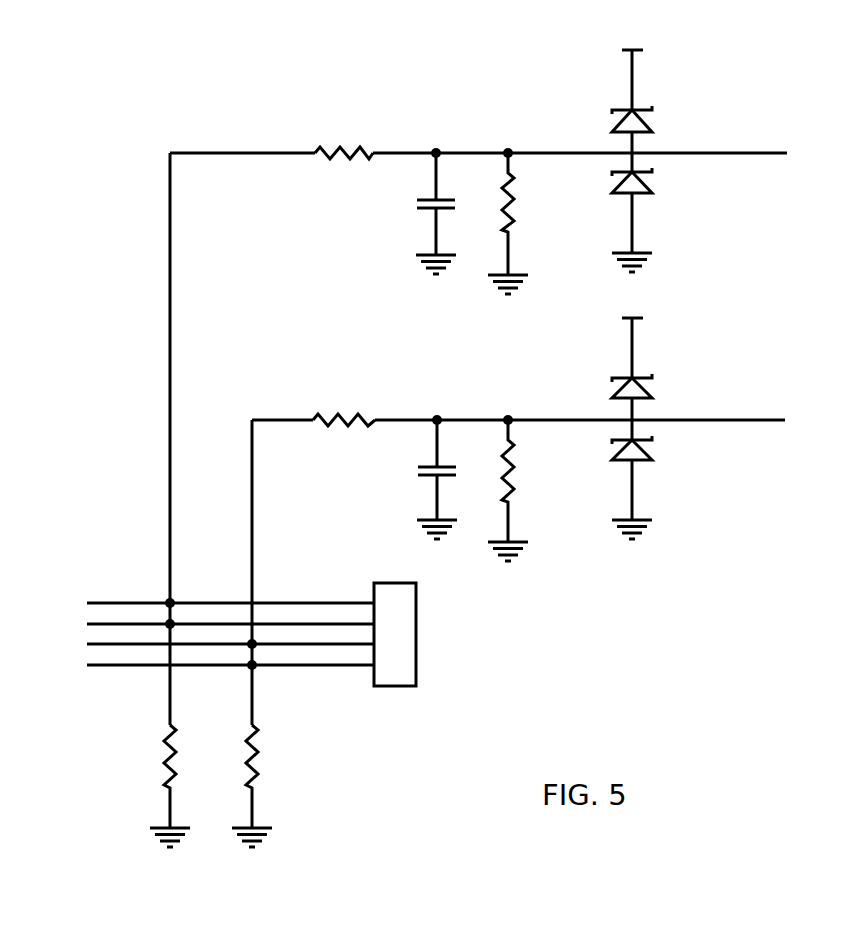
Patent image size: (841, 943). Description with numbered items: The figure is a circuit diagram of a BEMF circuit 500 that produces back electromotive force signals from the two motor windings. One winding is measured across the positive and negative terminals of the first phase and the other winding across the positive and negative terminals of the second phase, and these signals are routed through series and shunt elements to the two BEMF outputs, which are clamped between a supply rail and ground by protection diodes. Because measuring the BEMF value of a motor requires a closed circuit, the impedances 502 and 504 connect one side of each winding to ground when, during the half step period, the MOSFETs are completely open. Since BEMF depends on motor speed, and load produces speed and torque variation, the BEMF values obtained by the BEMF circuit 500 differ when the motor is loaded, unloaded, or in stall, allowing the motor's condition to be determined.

The BEMF circuit 500 is at (280, 111).
The impedance 502 is at (147, 757).
The impedance 504 is at (273, 762).